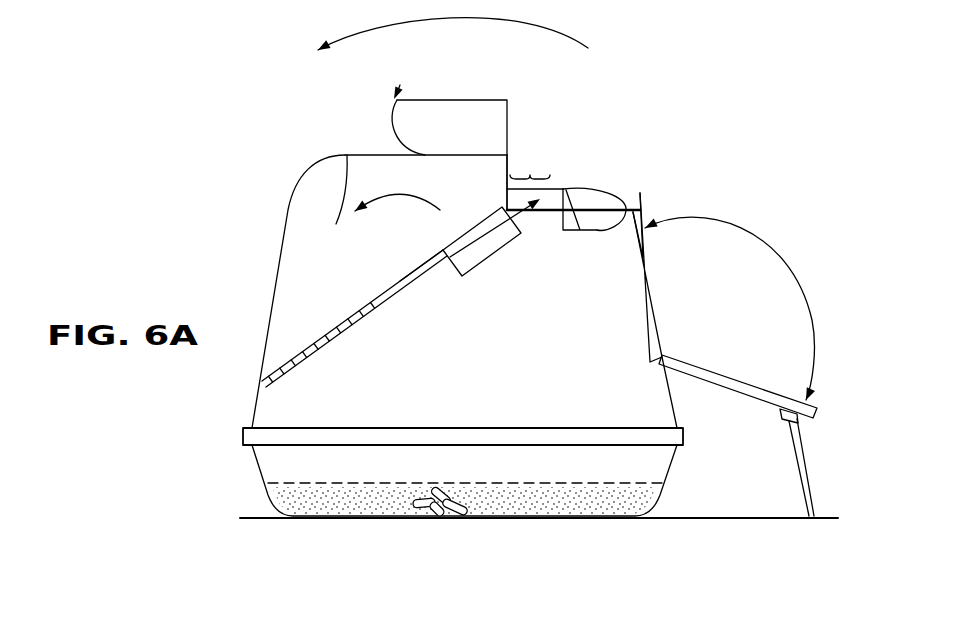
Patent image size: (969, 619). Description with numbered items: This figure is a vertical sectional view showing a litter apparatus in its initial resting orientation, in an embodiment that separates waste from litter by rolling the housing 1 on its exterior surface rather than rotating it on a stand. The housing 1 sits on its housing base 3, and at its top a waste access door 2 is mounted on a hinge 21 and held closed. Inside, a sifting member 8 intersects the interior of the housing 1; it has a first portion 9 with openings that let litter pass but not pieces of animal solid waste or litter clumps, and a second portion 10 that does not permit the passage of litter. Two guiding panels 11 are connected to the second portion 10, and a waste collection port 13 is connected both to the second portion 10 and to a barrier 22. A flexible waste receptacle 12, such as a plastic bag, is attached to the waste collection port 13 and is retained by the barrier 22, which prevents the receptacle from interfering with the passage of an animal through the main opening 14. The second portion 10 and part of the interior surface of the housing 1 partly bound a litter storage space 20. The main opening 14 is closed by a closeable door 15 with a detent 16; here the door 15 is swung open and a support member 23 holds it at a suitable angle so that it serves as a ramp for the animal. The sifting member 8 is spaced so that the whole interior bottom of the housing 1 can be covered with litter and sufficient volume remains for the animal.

The housing 1 is at (289, 219).
The waste access door 2 is at (450, 100).
The housing base 3 is at (343, 520).
The sifting member 8 is at (379, 297).
The first portion 9 is at (338, 319).
The second portion 10 is at (431, 254).
The guiding panels 11 is at (482, 260).
The flexible waste receptacle 12 is at (574, 231).
The waste collection port 13 is at (533, 171).
The main opening 14 is at (657, 336).
The closeable door 15 is at (746, 395).
The detent 16 is at (647, 215).
The litter storage space 20 is at (392, 279).
The hinge 21 is at (507, 155).
The barrier 22 is at (592, 232).
The support member 23 is at (806, 469).